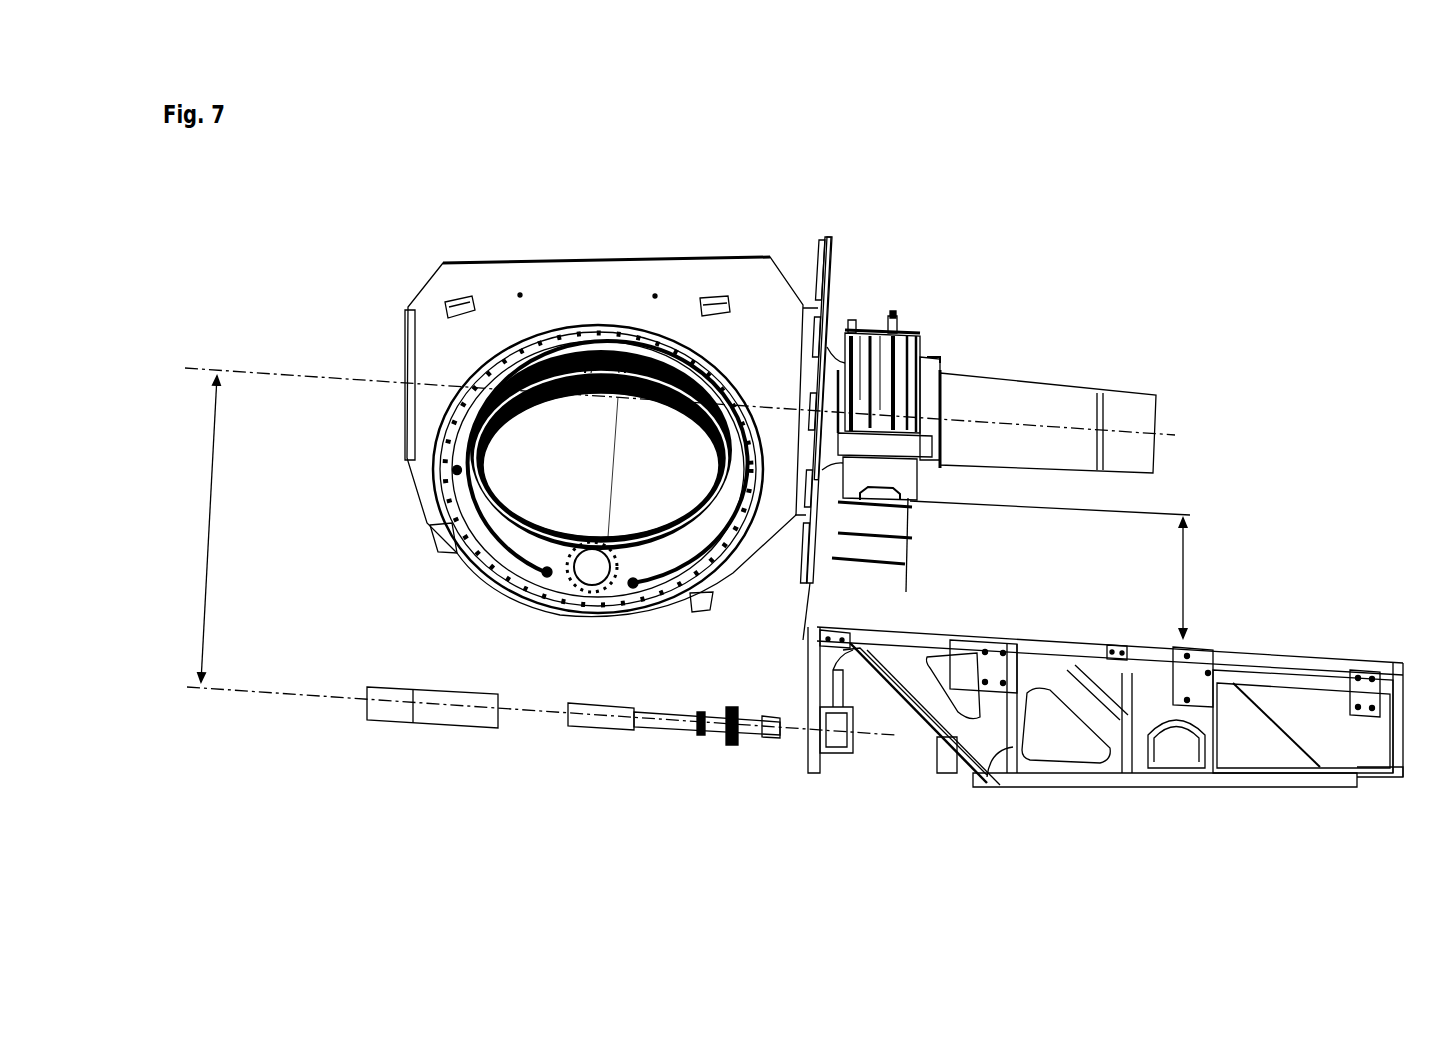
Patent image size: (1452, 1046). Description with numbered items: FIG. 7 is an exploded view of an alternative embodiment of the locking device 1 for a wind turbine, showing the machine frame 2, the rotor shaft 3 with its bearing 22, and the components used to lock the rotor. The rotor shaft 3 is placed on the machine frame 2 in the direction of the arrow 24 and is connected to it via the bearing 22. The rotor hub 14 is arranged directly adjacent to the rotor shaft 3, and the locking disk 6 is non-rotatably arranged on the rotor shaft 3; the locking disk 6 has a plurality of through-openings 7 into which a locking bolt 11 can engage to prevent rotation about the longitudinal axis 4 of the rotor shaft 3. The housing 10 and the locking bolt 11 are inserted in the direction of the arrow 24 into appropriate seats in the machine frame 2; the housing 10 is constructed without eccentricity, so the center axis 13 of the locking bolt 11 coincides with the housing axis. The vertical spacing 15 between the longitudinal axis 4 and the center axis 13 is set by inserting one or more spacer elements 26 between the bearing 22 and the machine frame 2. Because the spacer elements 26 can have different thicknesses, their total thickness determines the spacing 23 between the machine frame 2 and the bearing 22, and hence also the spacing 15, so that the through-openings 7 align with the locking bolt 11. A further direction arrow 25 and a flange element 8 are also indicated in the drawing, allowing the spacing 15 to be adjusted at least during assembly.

The locking device 1 is at (1208, 260).
The machine frame 2 is at (1168, 684).
The rotor shaft 3 is at (1137, 411).
The longitudinal axis 4 is at (285, 375).
The locking disk 6 is at (833, 245).
The through-openings 7 is at (818, 268).
The flange plate 8 is at (827, 265).
The housing 10 is at (427, 712).
The locking bolt 11 is at (583, 720).
The center axis 13 is at (252, 705).
The hub 14 is at (587, 280).
The vertical spacing 15 is at (185, 529).
The bearing 22 is at (922, 337).
The spacing 23 is at (1065, 569).
The arrow 24 is at (742, 775).
The direction arrow 25 is at (1308, 375).
The spacer elements 26 is at (925, 525).